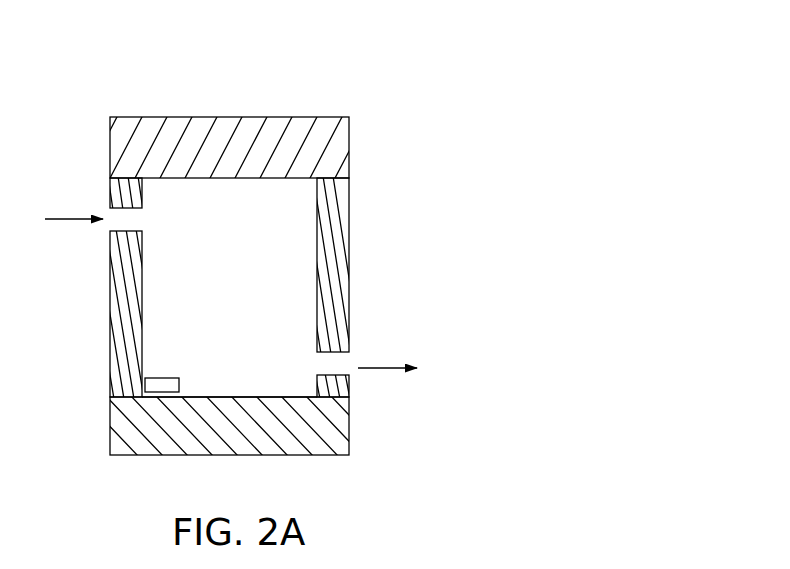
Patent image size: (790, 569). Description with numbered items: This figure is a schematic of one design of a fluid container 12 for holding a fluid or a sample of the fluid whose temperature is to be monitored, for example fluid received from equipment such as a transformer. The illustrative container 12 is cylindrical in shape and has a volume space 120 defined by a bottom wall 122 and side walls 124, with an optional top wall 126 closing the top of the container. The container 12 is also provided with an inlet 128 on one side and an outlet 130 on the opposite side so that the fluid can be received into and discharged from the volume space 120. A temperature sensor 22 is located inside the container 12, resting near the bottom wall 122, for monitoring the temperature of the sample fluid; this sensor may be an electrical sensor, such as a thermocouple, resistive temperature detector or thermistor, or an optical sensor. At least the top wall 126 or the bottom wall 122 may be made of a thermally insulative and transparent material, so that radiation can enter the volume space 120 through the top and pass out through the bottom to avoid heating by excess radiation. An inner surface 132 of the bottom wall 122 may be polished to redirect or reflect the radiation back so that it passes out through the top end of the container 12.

The container 12 is at (358, 66).
The top wall 126 is at (350, 152).
The side walls 124 is at (112, 345).
The inlet 128 is at (110, 212).
The outlet 130 is at (347, 358).
The volume space 120 is at (249, 295).
The bottom wall 122 is at (350, 427).
The inner surface 132 is at (222, 397).
The temperature sensor 22 is at (165, 378).